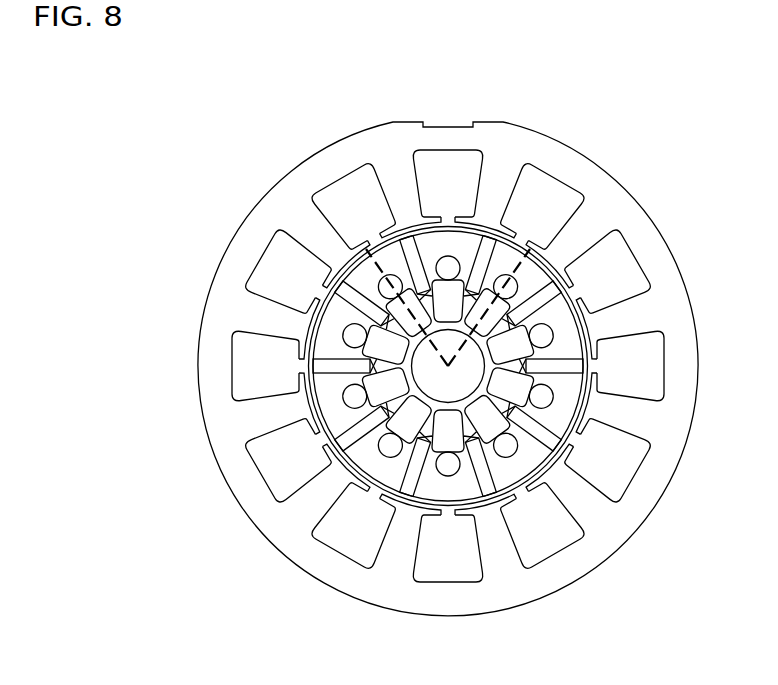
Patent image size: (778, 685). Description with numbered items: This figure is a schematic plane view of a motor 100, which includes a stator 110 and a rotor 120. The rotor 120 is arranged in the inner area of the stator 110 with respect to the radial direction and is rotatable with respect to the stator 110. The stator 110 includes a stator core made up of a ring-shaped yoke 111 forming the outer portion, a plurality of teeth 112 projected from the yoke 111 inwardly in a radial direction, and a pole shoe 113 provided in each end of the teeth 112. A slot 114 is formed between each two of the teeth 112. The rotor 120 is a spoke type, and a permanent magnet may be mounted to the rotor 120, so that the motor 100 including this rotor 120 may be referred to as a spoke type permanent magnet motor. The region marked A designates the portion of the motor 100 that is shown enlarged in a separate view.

The motor 100 is at (606, 124).
The stator 110 is at (275, 185).
The yoke 111 is at (240, 243).
The teeth 112 is at (270, 318).
The pole shoe 113 is at (313, 423).
The slot 114 is at (338, 535).
The rotor 120 is at (420, 505).
The enlarged region A is at (530, 288).